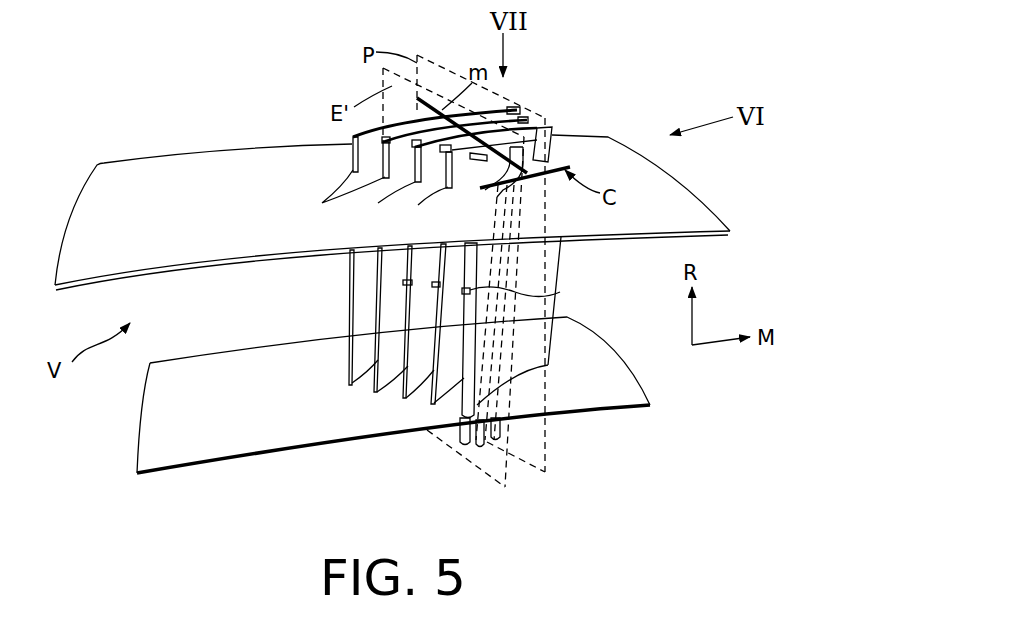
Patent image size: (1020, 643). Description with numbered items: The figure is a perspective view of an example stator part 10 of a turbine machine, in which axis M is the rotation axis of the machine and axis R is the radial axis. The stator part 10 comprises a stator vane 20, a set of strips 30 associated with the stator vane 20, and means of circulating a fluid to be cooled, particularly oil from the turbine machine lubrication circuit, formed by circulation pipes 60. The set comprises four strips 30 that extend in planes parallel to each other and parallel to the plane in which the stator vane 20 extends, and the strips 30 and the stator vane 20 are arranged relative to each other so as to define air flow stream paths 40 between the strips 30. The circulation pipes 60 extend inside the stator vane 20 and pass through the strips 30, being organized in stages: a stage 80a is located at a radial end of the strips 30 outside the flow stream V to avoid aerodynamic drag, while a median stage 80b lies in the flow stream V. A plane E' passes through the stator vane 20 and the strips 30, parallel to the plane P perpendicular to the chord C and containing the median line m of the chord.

The stator part 10 is at (612, 84).
The stator vane 20 is at (460, 438).
The strips 30 is at (565, 90).
The air flow stream paths 40 is at (368, 287).
The circulation pipes 60 is at (483, 165).
The first stage of pipes 80a is at (430, 176).
The median stage of pipes 80b is at (543, 293).